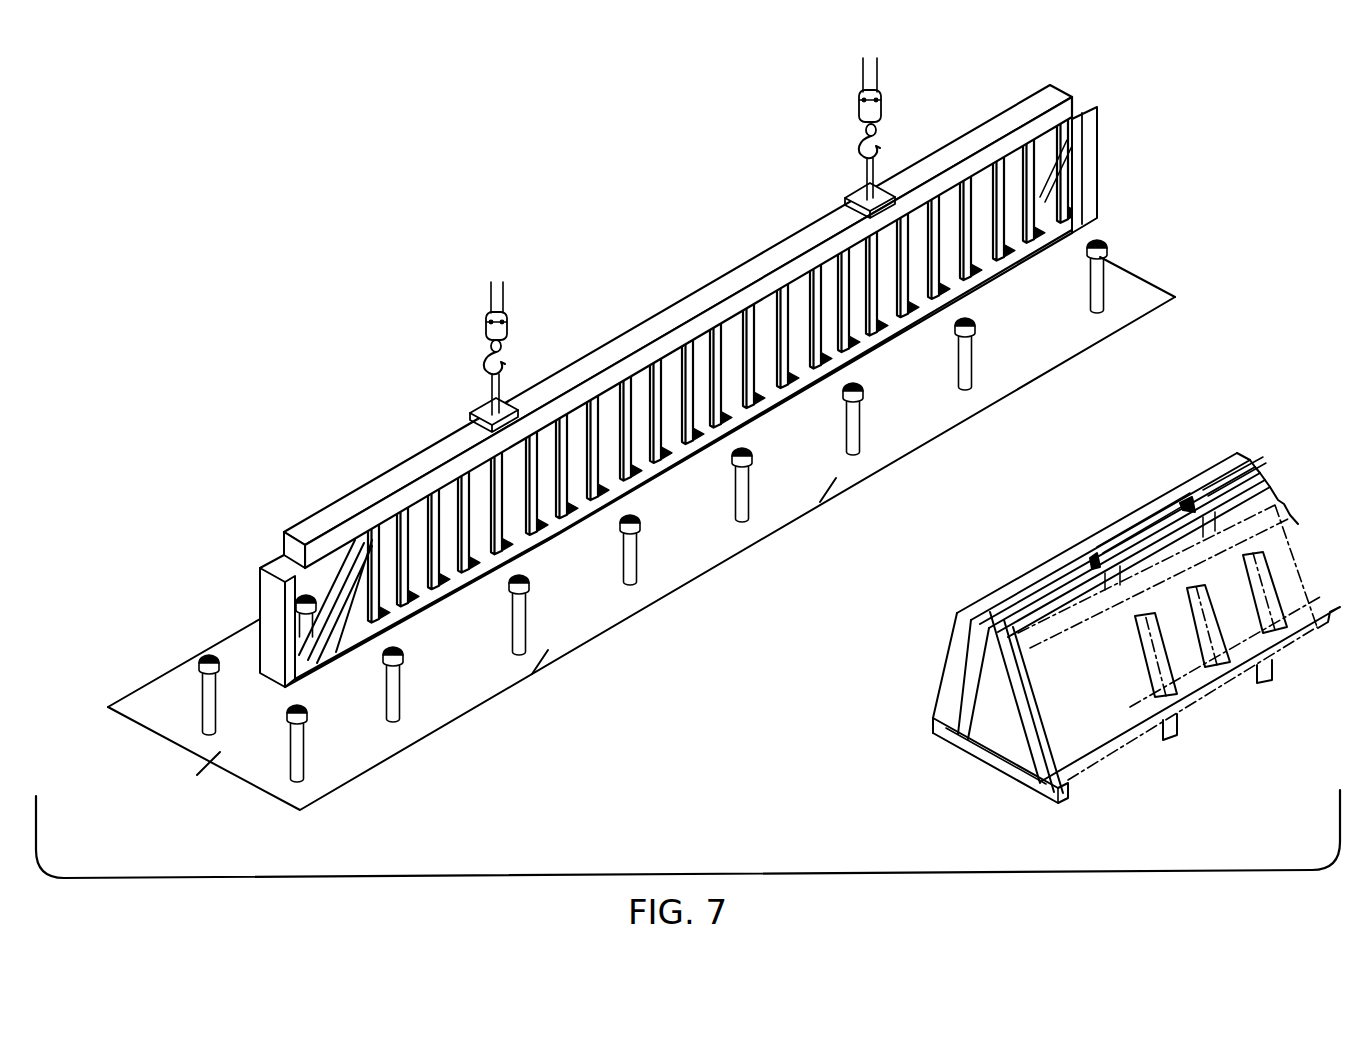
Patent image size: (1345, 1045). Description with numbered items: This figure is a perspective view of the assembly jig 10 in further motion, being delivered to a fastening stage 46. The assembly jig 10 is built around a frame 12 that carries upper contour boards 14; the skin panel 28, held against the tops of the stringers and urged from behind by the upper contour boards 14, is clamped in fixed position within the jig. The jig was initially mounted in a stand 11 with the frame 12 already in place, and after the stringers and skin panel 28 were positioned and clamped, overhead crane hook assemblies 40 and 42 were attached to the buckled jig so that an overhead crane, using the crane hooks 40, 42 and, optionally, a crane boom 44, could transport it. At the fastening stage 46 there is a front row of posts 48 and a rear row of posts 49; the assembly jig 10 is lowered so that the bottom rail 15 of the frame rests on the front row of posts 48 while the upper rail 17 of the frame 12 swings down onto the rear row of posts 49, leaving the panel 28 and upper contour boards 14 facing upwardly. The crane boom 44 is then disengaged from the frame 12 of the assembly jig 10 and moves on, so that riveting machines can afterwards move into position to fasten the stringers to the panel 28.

The assembly jig 10 is at (1130, 199).
The stand 11 is at (990, 772).
The frame 12 is at (270, 680).
The upper contour boards 14 is at (568, 518).
The bottom rail 15 is at (418, 600).
The upper rail 17 is at (283, 558).
The skin panel 28 is at (665, 438).
The overhead crane hook assembly 40 is at (507, 298).
The overhead crane hook assembly 42 is at (880, 72).
The crane boom 44 is at (764, 262).
The fastening stage 46 is at (252, 817).
The front row of posts 48 is at (203, 787).
The rear row of posts 49 is at (119, 738).